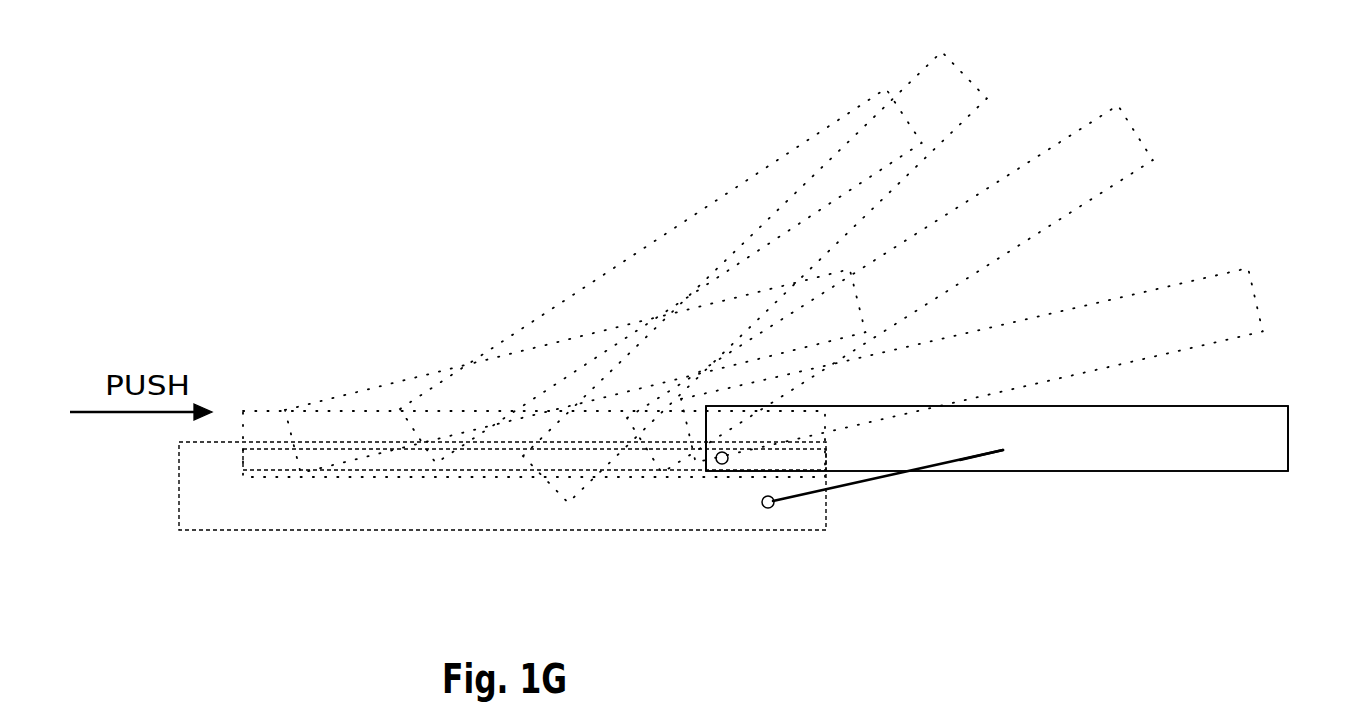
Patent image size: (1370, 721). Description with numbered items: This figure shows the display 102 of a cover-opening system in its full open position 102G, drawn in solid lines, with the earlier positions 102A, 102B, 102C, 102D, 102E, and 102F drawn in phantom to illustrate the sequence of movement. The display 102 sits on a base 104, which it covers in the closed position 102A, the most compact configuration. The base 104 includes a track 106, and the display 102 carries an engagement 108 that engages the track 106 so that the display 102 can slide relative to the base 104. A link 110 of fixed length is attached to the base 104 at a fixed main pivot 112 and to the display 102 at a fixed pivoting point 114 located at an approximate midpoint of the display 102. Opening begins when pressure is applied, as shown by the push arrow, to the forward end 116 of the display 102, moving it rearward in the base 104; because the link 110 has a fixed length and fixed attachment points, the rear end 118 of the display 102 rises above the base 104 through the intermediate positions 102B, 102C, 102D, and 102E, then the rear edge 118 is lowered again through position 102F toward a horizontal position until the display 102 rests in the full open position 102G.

The display 102 is at (1063, 450).
The closed position 102A is at (243, 425).
The display position 102B is at (437, 368).
The display position 102C is at (808, 141).
The display position 102D is at (928, 72).
The display position 102E is at (1105, 112).
The display position 102F is at (1203, 262).
The open position 102G is at (1182, 471).
The base 104 is at (470, 529).
The track 106 is at (392, 460).
The engagement 108 is at (716, 460).
The link 110 is at (866, 478).
The main pivot 112 is at (775, 504).
The pivoting point 114 is at (1003, 450).
The forward end 116 is at (706, 423).
The rear end 118 is at (1288, 413).